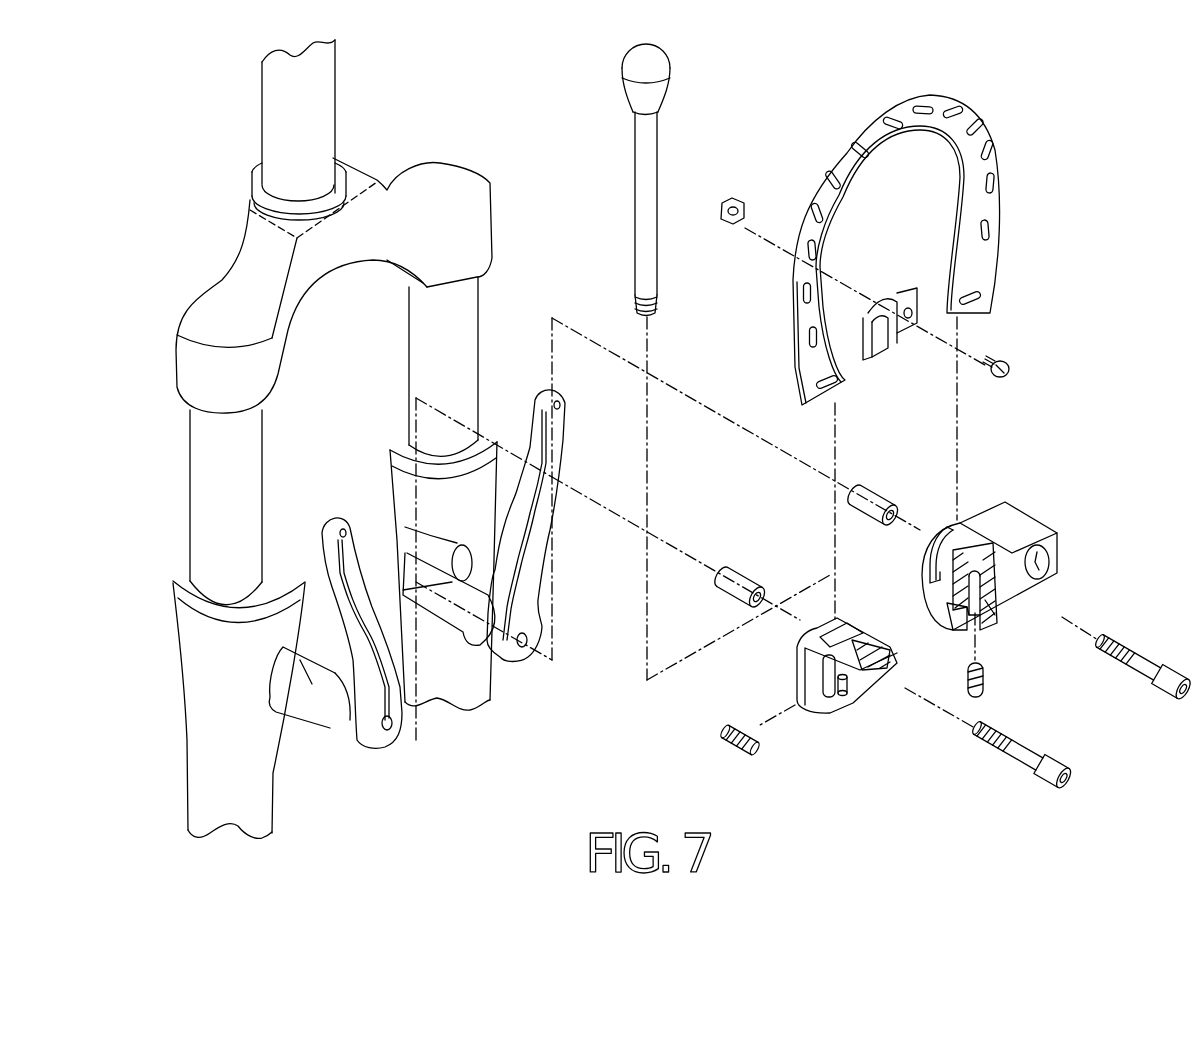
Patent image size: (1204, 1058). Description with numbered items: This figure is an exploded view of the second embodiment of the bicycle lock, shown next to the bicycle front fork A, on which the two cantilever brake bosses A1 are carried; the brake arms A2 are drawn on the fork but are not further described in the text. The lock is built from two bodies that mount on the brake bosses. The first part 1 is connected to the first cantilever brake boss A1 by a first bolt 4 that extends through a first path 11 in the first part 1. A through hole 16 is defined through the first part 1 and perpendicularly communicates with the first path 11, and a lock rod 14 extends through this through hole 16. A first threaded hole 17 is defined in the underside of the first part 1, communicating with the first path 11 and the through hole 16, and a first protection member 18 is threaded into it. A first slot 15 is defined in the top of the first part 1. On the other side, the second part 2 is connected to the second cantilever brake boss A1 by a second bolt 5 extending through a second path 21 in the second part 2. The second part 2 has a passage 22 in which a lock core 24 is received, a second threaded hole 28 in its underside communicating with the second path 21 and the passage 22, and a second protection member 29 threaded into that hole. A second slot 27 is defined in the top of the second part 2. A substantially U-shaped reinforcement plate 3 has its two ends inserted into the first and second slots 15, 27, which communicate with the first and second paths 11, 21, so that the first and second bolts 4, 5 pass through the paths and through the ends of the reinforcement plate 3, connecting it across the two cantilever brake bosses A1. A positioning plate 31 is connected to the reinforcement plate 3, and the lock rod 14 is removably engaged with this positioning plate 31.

The front fork A is at (362, 212).
The cantilever brake boss A1 is at (317, 688).
The link arm A2 is at (332, 522).
The first part 1 is at (823, 682).
The first path 11 is at (880, 680).
The lock rod 14 is at (645, 177).
The first slot 15 is at (847, 628).
The through hole 16 is at (827, 657).
The first threaded hole 17 is at (843, 685).
The first protection member 18 is at (723, 747).
The second part 2 is at (1022, 569).
The second path 21 is at (1000, 575).
The passage 22 is at (950, 620).
The lock core 24 is at (1033, 553).
The second slot 27 is at (947, 537).
The second threaded hole 28 is at (998, 612).
The second protection member 29 is at (983, 690).
The reinforcement plate 3 is at (967, 110).
The positioning plate 31 is at (883, 303).
The first bolt 4 is at (1025, 755).
The second bolt 5 is at (1153, 673).